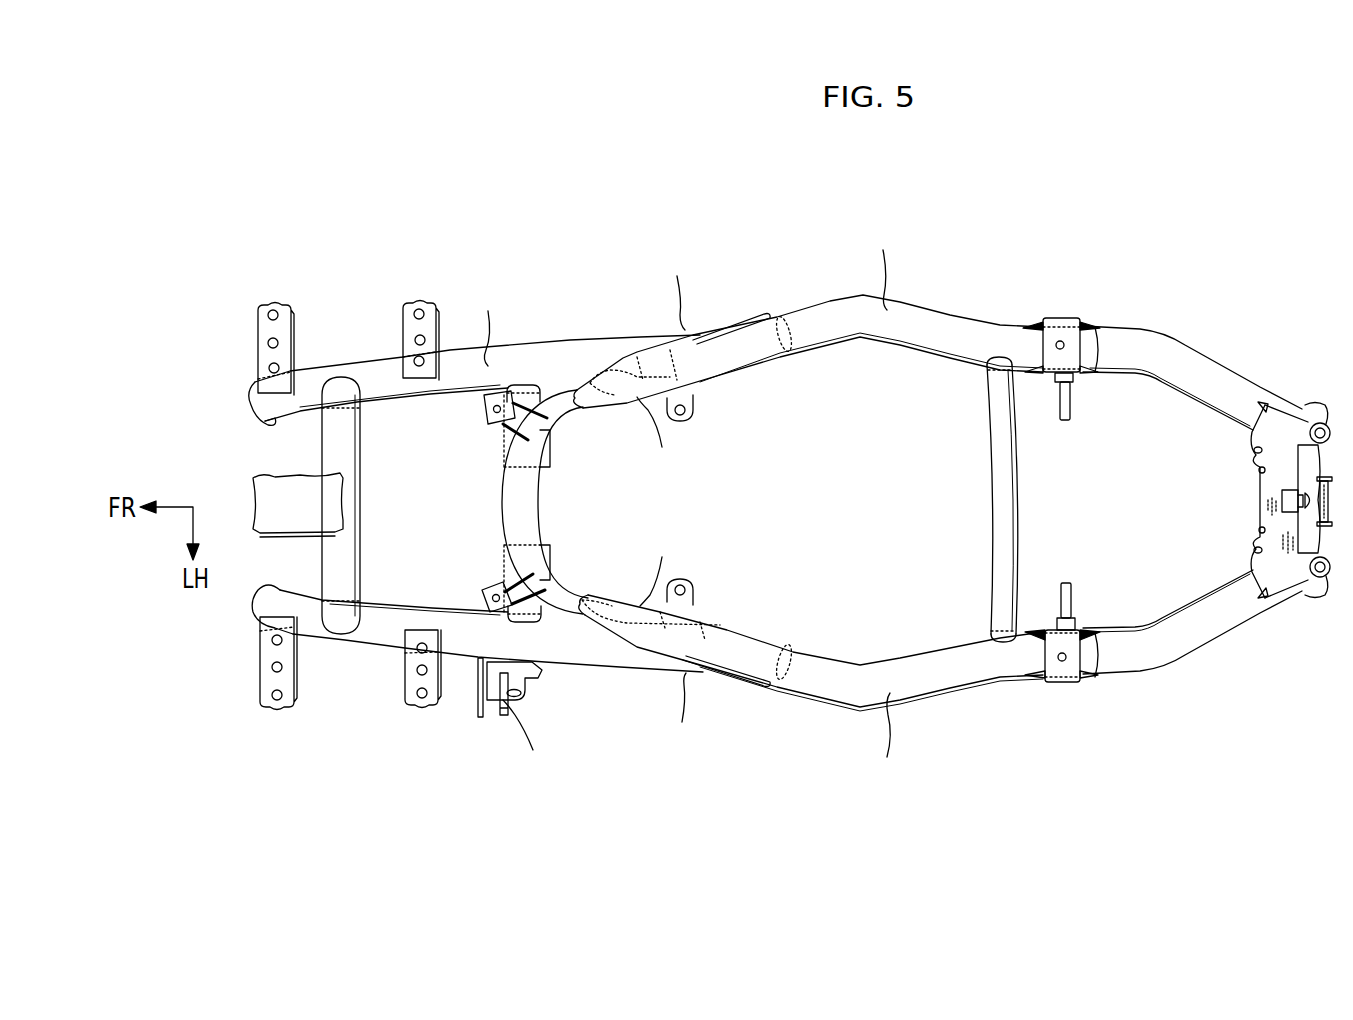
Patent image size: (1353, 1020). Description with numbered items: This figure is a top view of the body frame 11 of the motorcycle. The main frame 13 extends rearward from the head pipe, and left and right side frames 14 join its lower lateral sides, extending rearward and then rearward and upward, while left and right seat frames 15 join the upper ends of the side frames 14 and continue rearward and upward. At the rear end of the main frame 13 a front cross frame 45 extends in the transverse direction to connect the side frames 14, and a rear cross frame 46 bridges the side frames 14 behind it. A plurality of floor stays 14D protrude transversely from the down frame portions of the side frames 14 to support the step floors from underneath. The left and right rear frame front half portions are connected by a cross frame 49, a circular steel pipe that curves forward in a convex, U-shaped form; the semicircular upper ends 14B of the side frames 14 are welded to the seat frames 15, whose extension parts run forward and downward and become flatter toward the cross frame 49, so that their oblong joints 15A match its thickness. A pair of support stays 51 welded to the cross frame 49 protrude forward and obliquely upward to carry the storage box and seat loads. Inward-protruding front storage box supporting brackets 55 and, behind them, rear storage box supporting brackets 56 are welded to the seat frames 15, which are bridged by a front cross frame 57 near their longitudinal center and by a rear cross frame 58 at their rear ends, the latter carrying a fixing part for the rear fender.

The body frame 11 is at (1158, 222).
The main frame 13 is at (297, 500).
The side frames 14 is at (462, 353).
The upper ends of the rear frame front half portions 14B is at (747, 323).
The floor stays 14D is at (268, 330).
The seat frames 15 is at (930, 323).
The joints 15A is at (623, 393).
The front cross frame 45 is at (360, 463).
The rear cross frame 46 is at (536, 395).
The cross frame 49 is at (515, 512).
The support stays 51 is at (482, 410).
The front storage box supporting brackets 55 is at (694, 398).
The rear storage box supporting brackets 56 is at (1068, 330).
The front cross frame 57 is at (1000, 500).
The rear cross frame 58 is at (1280, 417).